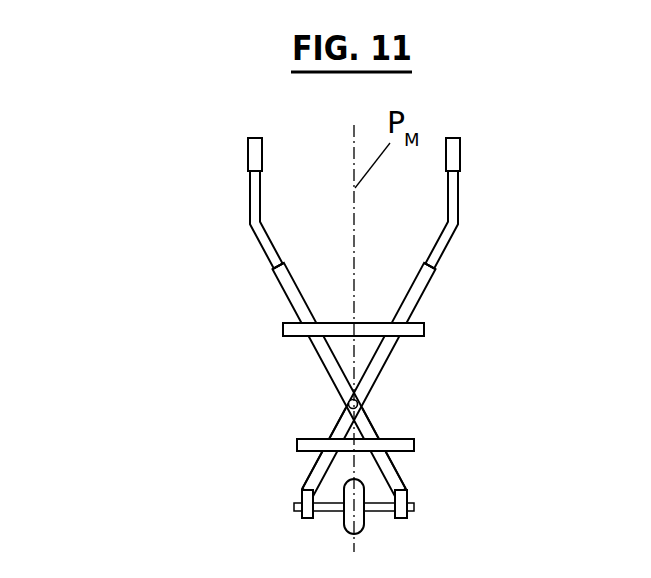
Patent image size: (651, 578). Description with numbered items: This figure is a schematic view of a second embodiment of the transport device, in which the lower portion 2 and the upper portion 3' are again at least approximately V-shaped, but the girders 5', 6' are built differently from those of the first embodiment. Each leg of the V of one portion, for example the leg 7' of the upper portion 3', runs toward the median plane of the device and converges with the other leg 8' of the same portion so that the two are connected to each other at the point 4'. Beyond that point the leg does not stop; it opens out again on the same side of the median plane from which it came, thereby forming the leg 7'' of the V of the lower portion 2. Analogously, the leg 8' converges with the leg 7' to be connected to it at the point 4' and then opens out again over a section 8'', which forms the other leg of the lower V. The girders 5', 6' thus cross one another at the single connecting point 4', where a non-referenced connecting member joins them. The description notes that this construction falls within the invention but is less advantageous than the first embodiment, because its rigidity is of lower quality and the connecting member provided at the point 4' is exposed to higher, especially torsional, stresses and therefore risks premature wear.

The lower portion 2 is at (270, 485).
The upper portion 3' is at (194, 203).
The connecting point 4' is at (466, 383).
The girder 5' is at (502, 211).
The girder 6' is at (270, 264).
The leg of the V of the upper portion 7' is at (255, 379).
The leg of the V of the lower portion 7'' is at (225, 426).
The leg of the V of the upper portion 8' is at (441, 379).
The section of leg 8'' is at (477, 458).